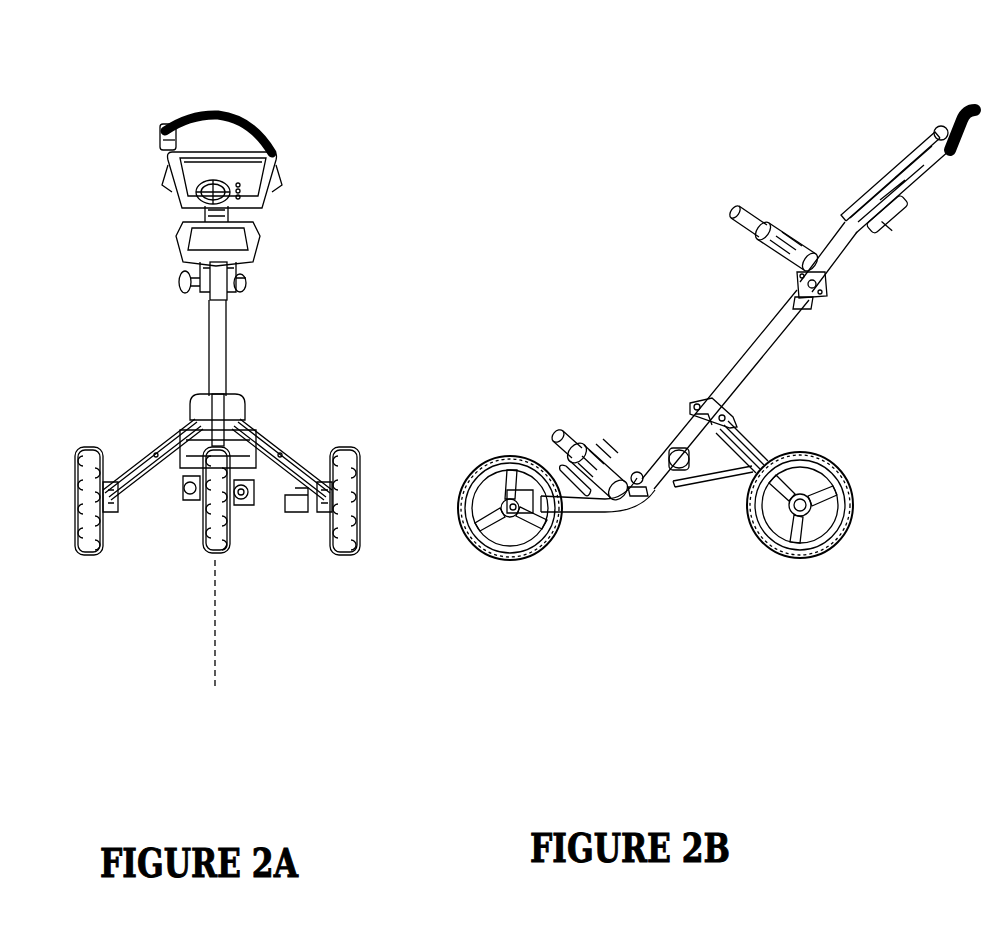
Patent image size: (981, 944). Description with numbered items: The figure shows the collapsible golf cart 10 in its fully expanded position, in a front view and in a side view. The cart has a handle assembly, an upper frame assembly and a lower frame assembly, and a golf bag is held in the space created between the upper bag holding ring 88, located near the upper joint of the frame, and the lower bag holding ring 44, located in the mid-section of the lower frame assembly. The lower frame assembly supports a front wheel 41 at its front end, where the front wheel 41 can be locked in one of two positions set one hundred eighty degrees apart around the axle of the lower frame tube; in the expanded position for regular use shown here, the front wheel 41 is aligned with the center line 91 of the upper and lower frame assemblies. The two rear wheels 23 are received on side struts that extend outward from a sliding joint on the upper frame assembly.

In FIG. 2A, the collapsible golf cart 10 is at (282, 327).
In FIG. 2A, the center line 91 is at (211, 641).
In FIG. 2B, the upper bag holding ring 88 is at (763, 210).
In FIG. 2B, the lower bag holding ring 44 is at (597, 443).
In FIG. 2B, the front wheel 41 is at (498, 572).
In FIG. 2B, the rear wheels 23 is at (822, 565).